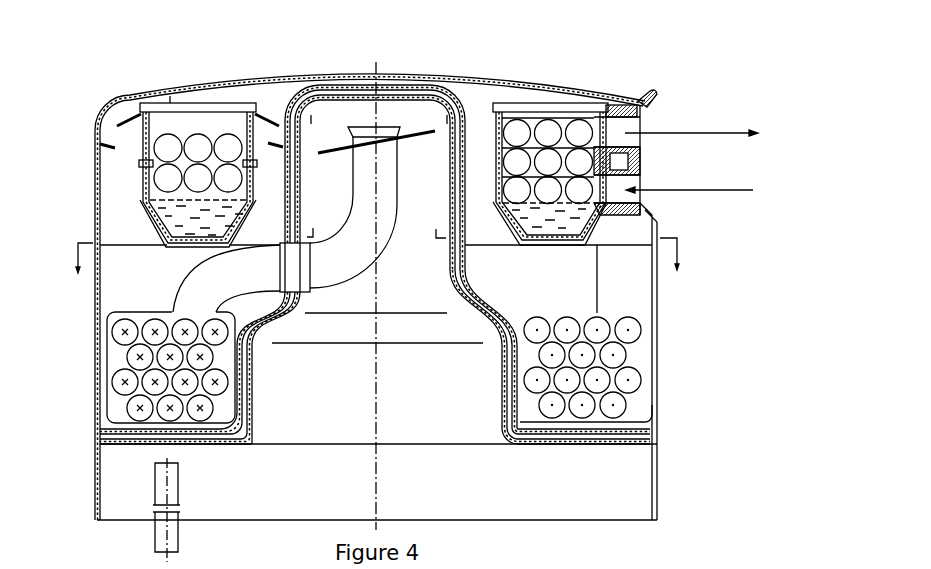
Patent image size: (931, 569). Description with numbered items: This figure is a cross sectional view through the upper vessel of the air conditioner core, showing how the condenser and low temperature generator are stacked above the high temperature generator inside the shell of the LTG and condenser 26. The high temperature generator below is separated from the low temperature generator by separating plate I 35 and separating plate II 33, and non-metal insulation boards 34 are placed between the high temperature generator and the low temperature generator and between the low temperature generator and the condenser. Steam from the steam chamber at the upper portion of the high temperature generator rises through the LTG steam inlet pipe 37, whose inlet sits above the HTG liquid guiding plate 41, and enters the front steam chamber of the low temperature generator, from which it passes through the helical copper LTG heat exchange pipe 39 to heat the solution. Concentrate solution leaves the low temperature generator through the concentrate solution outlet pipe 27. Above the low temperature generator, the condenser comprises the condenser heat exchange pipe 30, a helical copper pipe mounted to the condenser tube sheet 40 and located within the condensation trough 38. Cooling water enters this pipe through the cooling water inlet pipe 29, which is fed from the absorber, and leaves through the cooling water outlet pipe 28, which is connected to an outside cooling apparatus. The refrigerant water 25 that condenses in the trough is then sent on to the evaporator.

The refrigerant water 25 is at (185, 218).
The shell of the LTG and condenser 26 is at (97, 312).
The concentrate solution outlet pipe 27 is at (163, 492).
The cooling water outlet pipe 28 is at (615, 130).
The cooling water inlet pipe 29 is at (612, 197).
The condenser heat exchange pipe 30 is at (150, 138).
The separating plate II of the HTG and LTG 33 is at (243, 322).
The non-metal insulation board 34 is at (467, 273).
The separating plate I of the HTG and LTG 35 is at (593, 443).
The LTG steam inlet pipe 37 is at (222, 263).
The condensation trough 38 is at (146, 162).
The LTG heat exchange pipe 39 is at (125, 333).
The condenser tube sheet 40 is at (644, 97).
The HTG liquid guiding plate 41 is at (342, 146).